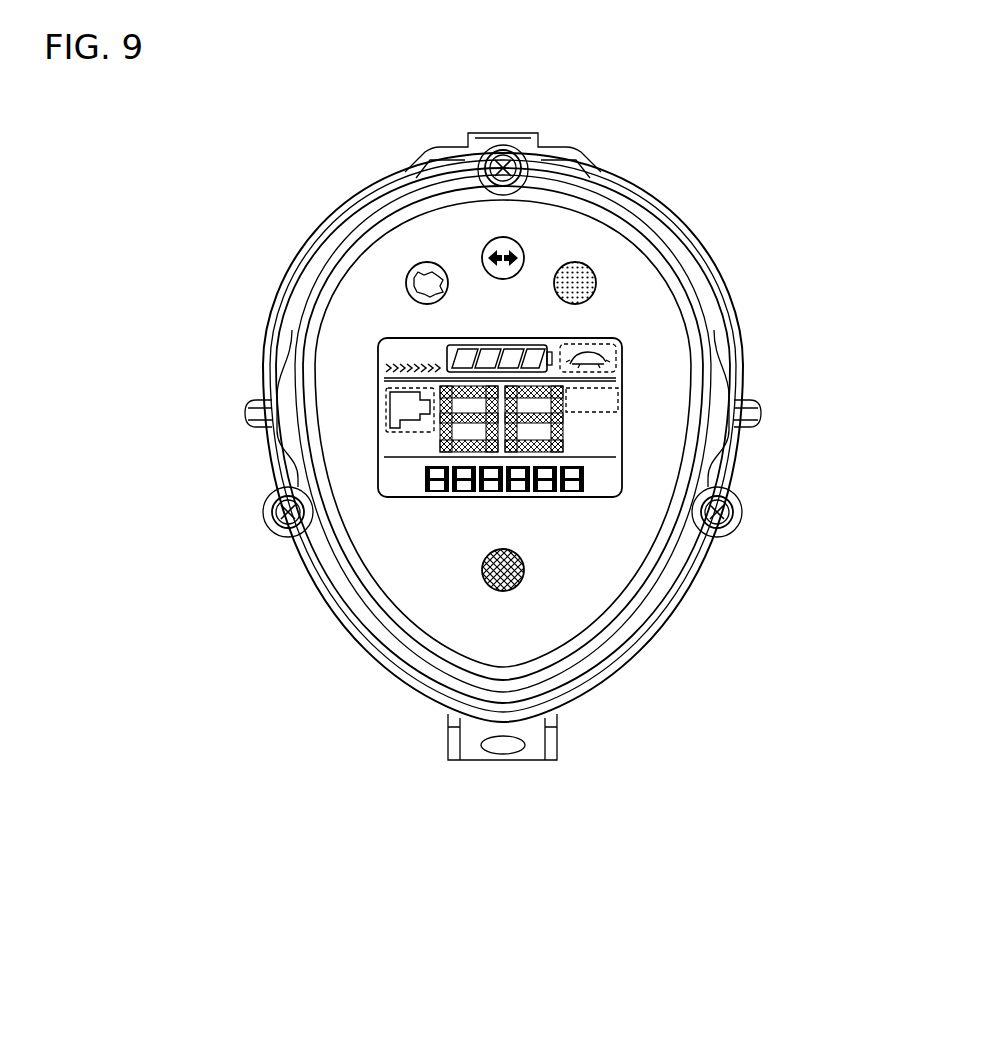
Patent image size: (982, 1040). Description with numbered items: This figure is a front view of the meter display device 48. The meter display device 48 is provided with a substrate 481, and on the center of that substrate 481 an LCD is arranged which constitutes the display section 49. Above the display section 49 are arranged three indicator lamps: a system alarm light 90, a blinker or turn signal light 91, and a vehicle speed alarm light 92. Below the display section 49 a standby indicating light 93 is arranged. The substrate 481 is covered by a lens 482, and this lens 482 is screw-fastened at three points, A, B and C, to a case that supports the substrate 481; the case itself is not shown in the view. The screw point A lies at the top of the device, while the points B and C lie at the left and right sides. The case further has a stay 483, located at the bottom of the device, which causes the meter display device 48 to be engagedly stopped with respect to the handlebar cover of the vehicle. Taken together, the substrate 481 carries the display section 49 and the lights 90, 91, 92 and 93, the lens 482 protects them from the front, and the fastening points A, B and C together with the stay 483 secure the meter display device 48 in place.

The meter display device 48 is at (740, 285).
The substrate 481 is at (580, 588).
The lens 482 is at (650, 590).
The stay 483 is at (527, 765).
The display section 49 is at (400, 495).
The system alarm light 90 is at (418, 272).
The blinker light 91 is at (497, 248).
The vehicle speed alarm light 92 is at (585, 274).
The standby indicating light 93 is at (493, 585).
The screw-fastening point A is at (506, 150).
The screw-fastening point B is at (275, 512).
The screw-fastening point C is at (730, 512).